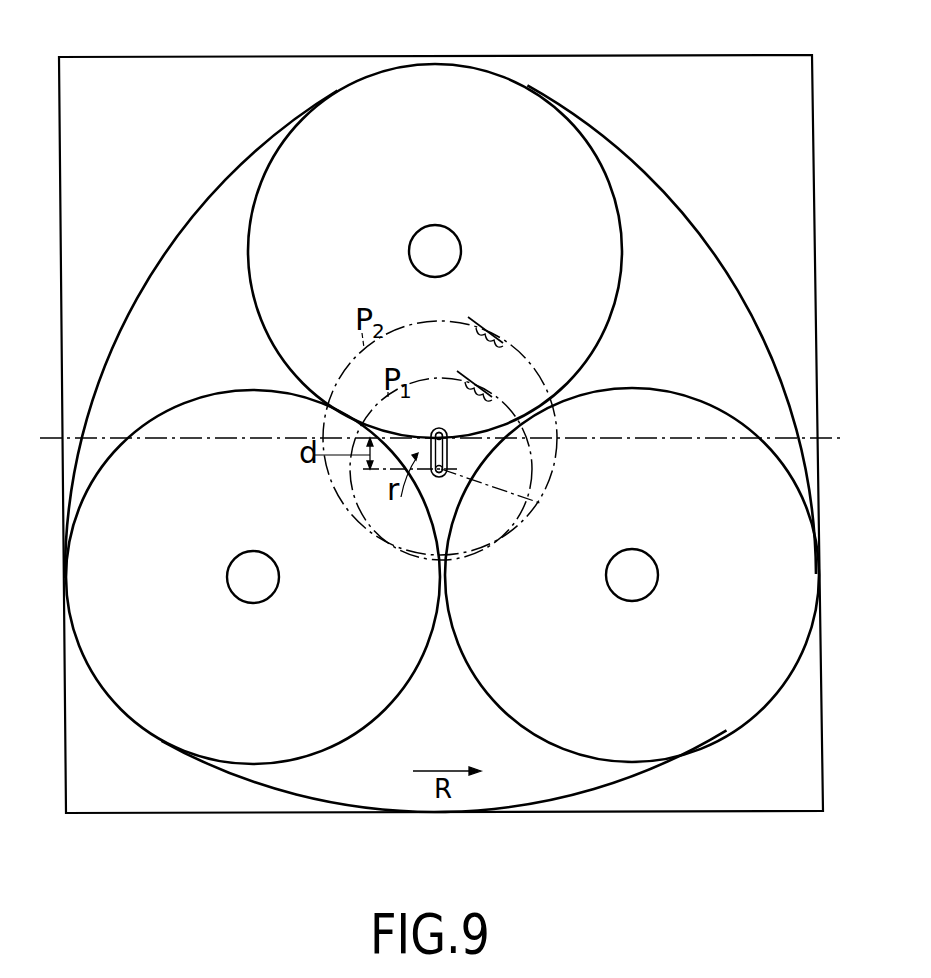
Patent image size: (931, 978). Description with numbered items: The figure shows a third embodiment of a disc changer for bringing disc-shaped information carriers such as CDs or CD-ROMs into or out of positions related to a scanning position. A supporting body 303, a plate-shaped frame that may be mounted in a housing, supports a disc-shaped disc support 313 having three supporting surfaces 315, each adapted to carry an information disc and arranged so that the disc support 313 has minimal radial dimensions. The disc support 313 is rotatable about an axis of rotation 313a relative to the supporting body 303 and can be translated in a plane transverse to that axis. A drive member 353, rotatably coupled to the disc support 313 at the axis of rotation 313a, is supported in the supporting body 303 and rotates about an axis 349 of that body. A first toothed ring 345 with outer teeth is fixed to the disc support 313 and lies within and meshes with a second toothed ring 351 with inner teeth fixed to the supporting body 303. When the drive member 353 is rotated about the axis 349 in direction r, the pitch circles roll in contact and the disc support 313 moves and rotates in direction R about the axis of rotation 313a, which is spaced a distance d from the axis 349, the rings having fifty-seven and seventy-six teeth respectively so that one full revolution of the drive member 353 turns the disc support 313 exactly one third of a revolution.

The supporting body 303 is at (794, 321).
The disc support 313 is at (712, 296).
The axis of rotation 313a is at (533, 498).
The supporting surfaces 315 is at (513, 113).
The first toothed ring 345 is at (492, 398).
The axis 349 is at (661, 441).
The second toothed ring 351 is at (500, 334).
The drive member 353 is at (447, 453).